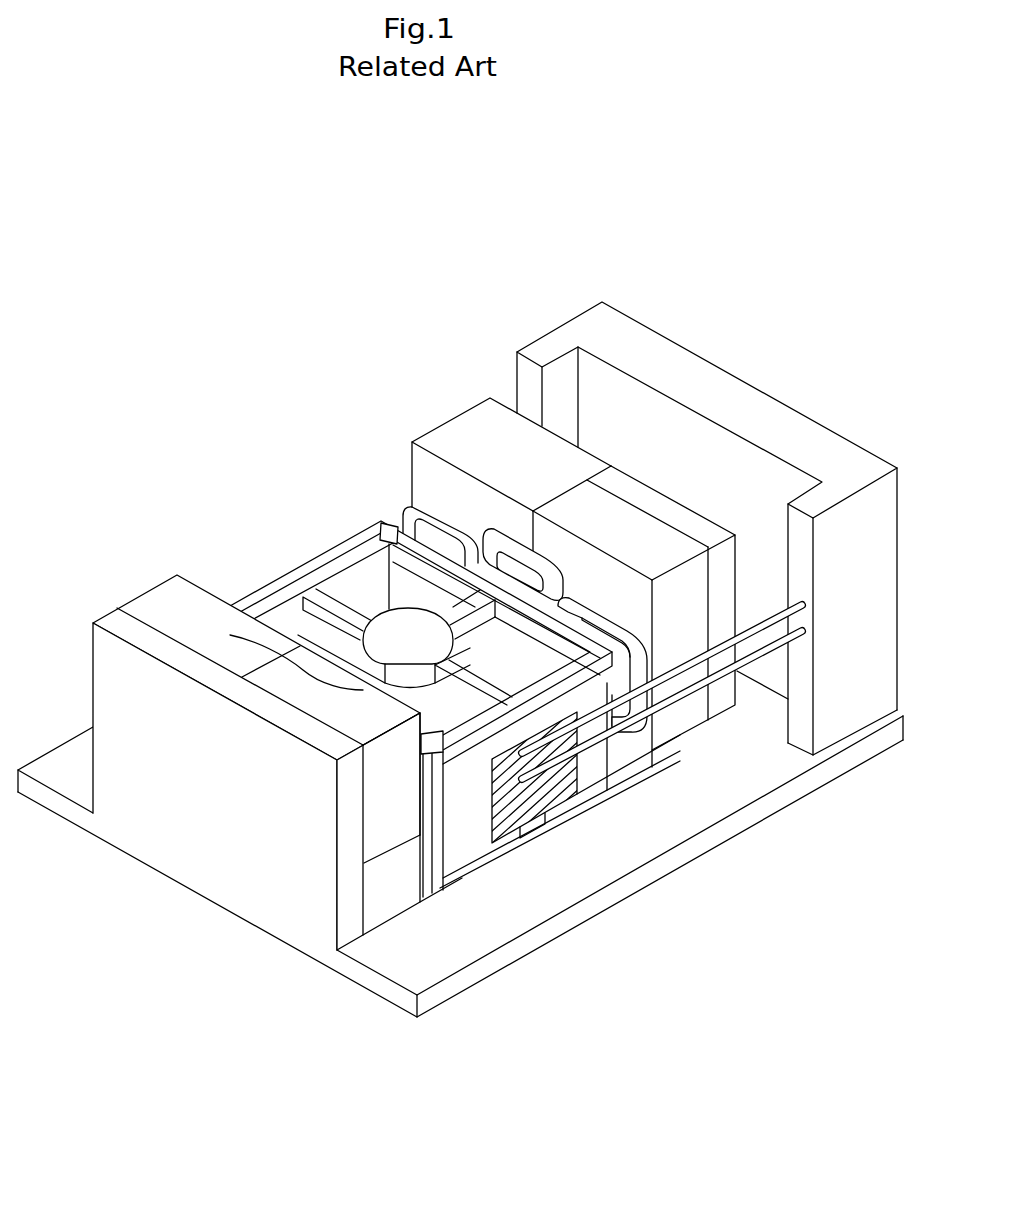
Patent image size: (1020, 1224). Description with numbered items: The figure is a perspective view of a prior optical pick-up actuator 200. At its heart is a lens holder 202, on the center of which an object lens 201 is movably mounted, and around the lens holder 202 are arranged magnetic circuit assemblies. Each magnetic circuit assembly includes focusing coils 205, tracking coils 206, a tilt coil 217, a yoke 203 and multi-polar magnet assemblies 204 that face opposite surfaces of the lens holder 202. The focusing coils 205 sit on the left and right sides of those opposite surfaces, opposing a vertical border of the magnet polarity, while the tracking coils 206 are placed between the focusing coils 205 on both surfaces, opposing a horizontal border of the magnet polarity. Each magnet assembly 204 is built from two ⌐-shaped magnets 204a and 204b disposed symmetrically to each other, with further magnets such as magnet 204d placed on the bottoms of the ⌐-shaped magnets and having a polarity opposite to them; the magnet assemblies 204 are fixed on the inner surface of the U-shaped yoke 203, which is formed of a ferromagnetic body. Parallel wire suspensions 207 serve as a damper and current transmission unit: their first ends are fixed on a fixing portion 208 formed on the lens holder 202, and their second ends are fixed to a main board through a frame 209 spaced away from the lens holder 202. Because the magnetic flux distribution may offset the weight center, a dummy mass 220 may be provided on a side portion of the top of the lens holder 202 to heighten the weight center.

The optical pick-up actuator 200 is at (195, 181).
The object lens 201 is at (407, 638).
The lens holder 202 is at (370, 568).
The yoke 203 is at (690, 520).
The multi-polar magnet assembly 204 is at (557, 483).
The ⌐-shaped magnet 204a is at (460, 437).
The ⌐-shaped magnet 204b is at (623, 527).
The magnet 204d is at (403, 887).
The focusing coil 205 is at (423, 512).
The tracking coil 206 is at (523, 537).
The wire suspension 207 is at (645, 712).
The fixing portion 208 is at (557, 797).
The frame 209 is at (633, 340).
The tilt coil 217 is at (297, 568).
The dummy mass 220 is at (380, 527).